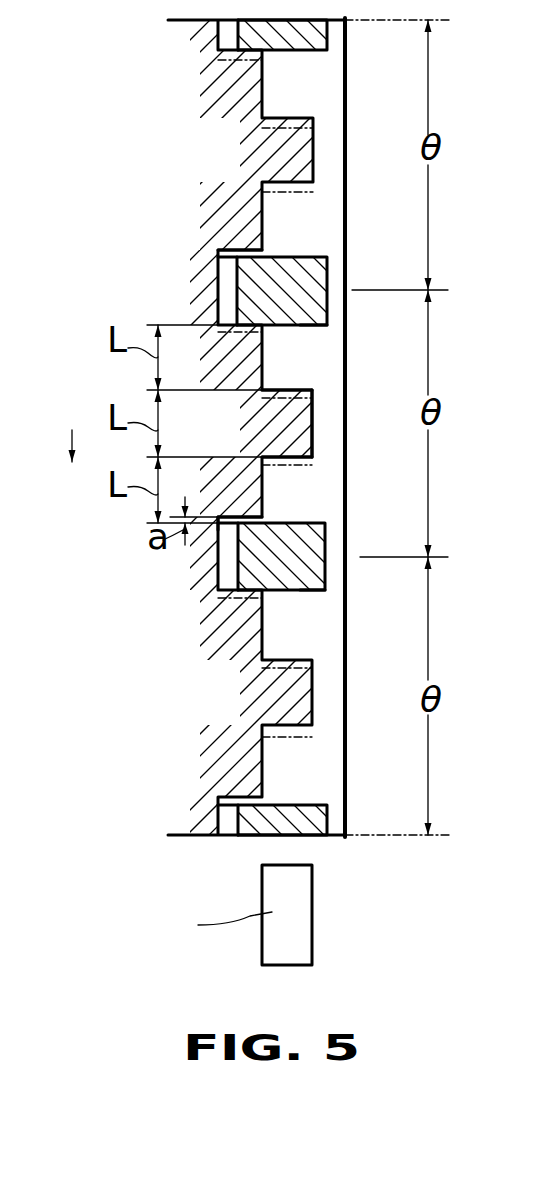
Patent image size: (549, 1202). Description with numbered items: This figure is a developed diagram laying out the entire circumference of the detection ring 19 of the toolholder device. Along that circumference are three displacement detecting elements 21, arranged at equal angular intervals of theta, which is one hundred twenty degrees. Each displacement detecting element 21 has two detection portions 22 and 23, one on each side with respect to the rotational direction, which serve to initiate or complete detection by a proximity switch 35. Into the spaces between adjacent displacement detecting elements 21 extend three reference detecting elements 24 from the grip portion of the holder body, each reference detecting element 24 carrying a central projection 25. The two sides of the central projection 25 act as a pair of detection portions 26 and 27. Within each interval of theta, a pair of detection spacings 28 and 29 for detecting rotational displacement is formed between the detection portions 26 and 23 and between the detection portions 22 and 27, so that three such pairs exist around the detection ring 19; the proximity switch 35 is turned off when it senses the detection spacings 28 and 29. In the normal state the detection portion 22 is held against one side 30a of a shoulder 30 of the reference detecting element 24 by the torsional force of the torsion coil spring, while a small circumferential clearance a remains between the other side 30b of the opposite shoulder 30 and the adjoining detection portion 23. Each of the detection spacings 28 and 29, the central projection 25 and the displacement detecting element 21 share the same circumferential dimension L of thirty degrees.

The detection ring 19 is at (308, 90).
The displacement detecting element 21 is at (318, 286).
The detection portion 22 is at (312, 327).
The detection portion 23 is at (300, 257).
The reference detecting element 24 is at (243, 155).
The central projection 25 is at (306, 425).
The detection portion 26 is at (303, 467).
The detection portion 27 is at (288, 390).
The detection spacing 28 is at (327, 512).
The detection spacing 29 is at (332, 373).
The shoulder 30 is at (215, 483).
The one side of shoulder 30a is at (232, 318).
The other side of opposite shoulder 30b is at (230, 528).
The proximity switch 35 is at (350, 901).